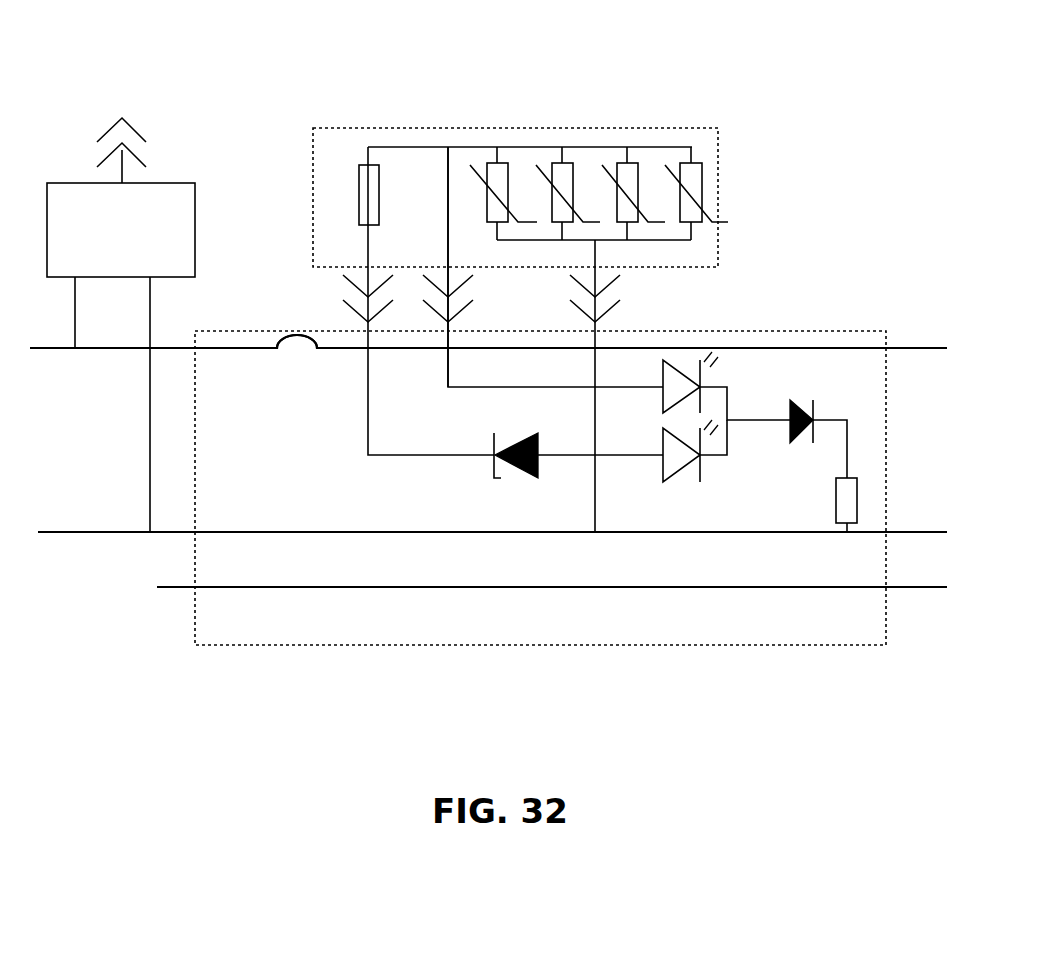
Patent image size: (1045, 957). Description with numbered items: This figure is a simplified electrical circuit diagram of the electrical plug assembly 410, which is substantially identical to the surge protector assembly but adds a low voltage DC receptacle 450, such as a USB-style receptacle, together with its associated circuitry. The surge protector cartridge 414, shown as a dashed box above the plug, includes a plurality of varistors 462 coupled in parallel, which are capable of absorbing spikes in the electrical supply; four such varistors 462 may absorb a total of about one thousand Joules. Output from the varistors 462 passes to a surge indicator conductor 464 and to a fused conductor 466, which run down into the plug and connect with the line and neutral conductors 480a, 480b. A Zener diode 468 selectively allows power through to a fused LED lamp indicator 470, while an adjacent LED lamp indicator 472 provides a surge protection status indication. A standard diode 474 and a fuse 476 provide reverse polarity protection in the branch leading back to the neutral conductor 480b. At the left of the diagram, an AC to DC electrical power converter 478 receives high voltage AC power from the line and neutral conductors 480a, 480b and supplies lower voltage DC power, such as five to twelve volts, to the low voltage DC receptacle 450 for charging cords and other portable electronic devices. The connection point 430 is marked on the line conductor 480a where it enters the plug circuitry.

The electrical plug assembly 410 is at (190, 685).
The surge protector cartridge 414 is at (470, 80).
The line connection 430 is at (297, 330).
The low voltage DC receptacle 450 is at (168, 97).
The varistors 462 is at (657, 158).
The surge indicator conductor 464 is at (448, 248).
The fused conductor 466 is at (391, 146).
The Zener diode 468 is at (472, 465).
The fused LED lamp indicator 470 is at (651, 473).
The LED lamp indicator 472 is at (715, 372).
The standard diode 474 is at (833, 398).
The fuse 476 is at (818, 508).
The AC to DC electrical power converter 478 is at (196, 233).
The line conductor 480a is at (105, 351).
The neutral conductor 480b is at (88, 530).